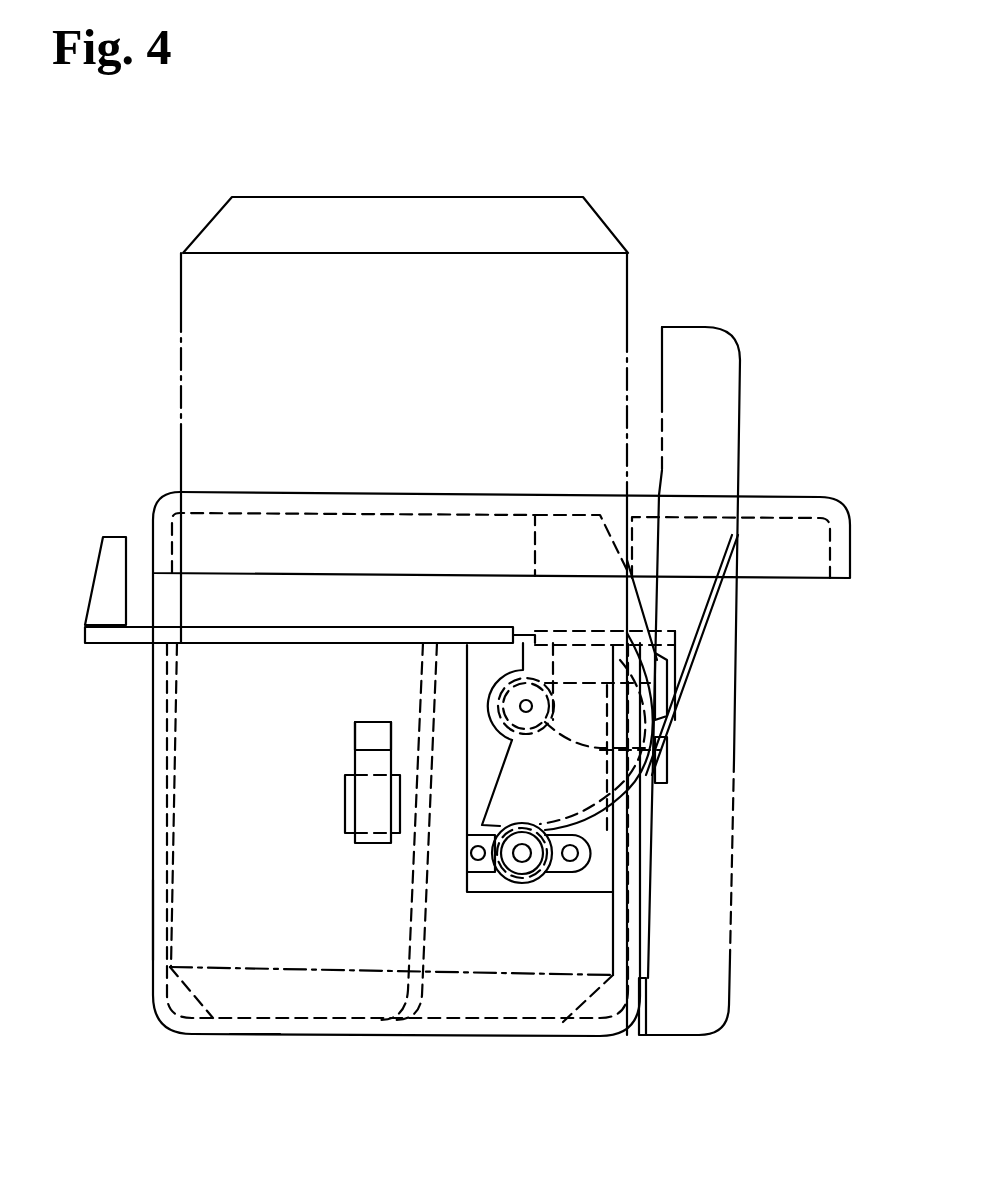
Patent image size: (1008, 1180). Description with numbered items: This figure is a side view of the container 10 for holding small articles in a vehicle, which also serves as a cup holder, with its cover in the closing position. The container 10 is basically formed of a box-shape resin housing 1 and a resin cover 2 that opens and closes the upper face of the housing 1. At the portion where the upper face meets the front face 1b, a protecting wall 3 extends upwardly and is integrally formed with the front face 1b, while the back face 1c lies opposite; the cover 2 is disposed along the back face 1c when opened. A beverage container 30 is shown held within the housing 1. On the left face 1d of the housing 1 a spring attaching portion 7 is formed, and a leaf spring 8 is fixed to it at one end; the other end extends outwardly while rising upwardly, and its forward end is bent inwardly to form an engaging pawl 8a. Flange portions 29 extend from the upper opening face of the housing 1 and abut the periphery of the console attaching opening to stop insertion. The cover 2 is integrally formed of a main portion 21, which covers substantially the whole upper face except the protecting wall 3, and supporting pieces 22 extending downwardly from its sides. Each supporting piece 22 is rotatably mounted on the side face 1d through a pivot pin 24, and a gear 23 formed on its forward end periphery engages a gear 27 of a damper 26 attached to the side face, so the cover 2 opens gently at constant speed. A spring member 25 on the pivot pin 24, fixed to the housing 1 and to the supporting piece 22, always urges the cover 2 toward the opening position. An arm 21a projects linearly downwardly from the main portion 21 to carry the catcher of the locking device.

The housing 1 is at (153, 784).
The front face 1b is at (153, 900).
The back face 1c is at (648, 998).
The left face 1d is at (252, 1005).
The cover 2 is at (207, 527).
The protecting wall 3 is at (112, 581).
The spring attaching portion 7 is at (345, 795).
The leaf spring 8 is at (365, 815).
The engaging pawl 8a is at (378, 748).
The container 10 is at (742, 292).
The main portion 21 is at (797, 512).
The arm 21a is at (688, 612).
The supporting piece 22 is at (600, 770).
The gear 23 is at (605, 808).
The pivot pin 24 is at (532, 706).
The spring member 25 is at (660, 750).
The damper 26 is at (555, 878).
The gear 27 is at (512, 882).
The flange portion 29 is at (108, 645).
The beverage container 30 is at (181, 300).